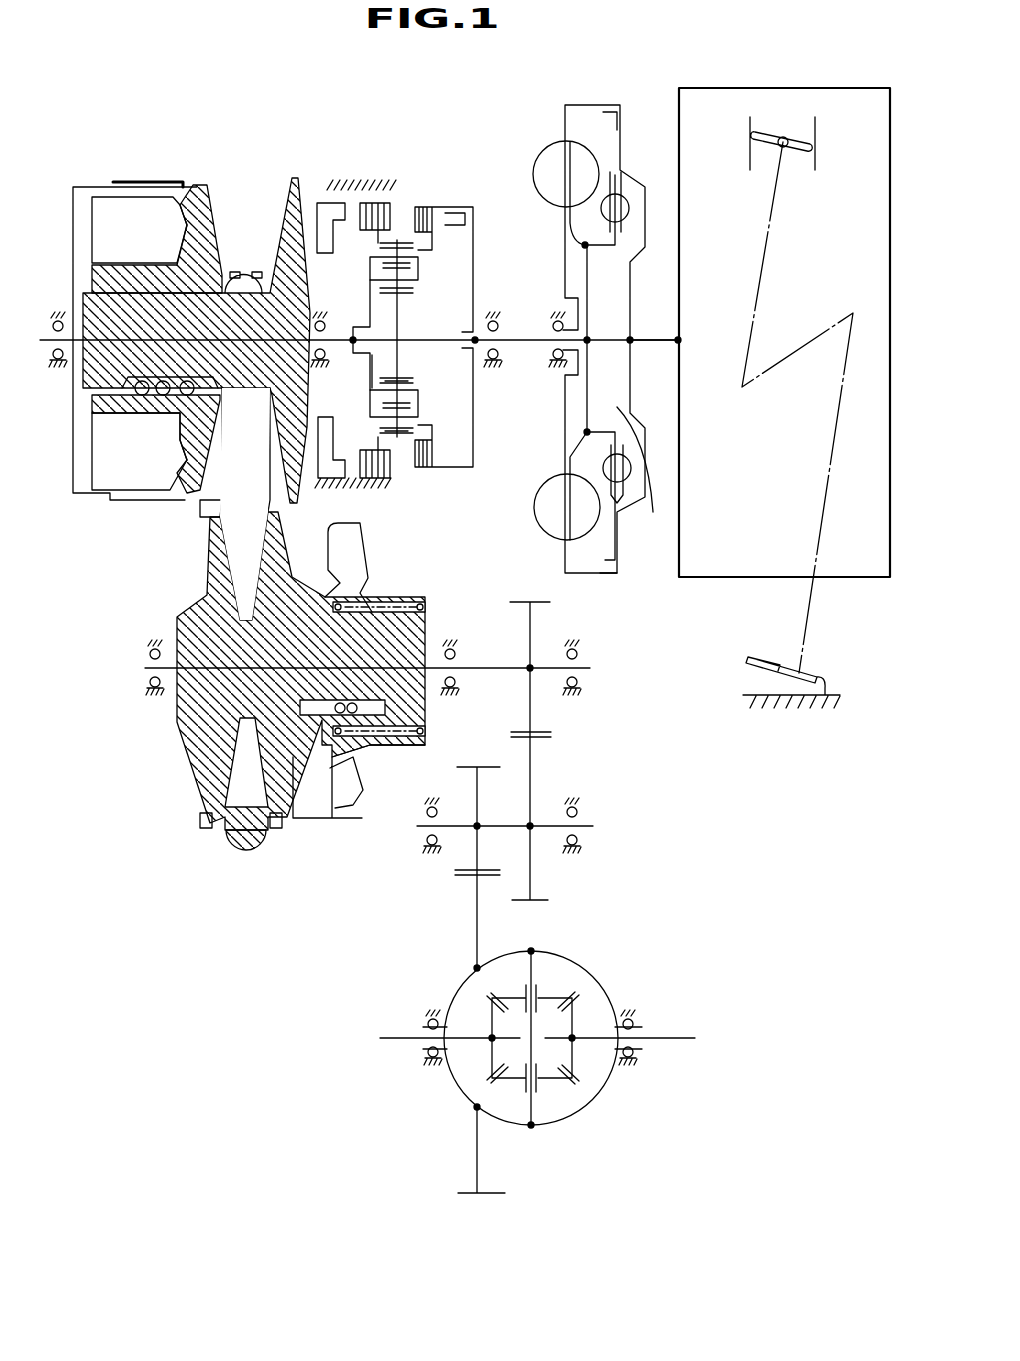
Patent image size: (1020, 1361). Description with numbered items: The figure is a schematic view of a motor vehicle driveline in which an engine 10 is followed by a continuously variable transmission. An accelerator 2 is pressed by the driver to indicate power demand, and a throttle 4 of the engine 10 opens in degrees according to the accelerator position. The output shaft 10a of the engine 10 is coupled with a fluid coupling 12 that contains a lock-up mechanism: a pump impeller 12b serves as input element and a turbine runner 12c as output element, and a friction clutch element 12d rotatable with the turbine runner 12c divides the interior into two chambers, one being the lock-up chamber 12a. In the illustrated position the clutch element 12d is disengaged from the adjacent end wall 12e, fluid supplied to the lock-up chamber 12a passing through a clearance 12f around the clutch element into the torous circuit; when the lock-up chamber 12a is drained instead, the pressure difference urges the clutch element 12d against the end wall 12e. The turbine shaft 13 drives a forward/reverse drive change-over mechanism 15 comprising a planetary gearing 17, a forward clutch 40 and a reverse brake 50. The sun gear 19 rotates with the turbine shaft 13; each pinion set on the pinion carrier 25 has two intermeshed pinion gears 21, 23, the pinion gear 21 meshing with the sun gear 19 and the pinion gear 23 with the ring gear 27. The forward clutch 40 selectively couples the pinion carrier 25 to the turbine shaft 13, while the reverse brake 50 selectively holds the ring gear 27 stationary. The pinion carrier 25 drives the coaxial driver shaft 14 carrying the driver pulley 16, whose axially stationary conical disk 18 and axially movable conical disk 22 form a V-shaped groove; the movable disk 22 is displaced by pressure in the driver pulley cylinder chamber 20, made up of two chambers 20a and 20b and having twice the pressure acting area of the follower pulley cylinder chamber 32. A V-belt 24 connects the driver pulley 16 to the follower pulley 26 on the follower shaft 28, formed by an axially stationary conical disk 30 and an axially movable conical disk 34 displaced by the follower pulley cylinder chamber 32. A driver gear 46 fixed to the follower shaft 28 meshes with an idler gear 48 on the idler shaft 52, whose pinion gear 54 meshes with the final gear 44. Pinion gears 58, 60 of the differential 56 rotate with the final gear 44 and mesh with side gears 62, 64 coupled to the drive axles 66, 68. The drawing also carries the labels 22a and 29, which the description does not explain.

The accelerator 2 is at (805, 673).
The throttle 4 is at (770, 130).
The engine 10 is at (753, 88).
The output shaft 10a is at (657, 342).
The fluid coupling 12 is at (596, 100).
The lock-up chamber 12a is at (646, 473).
The pump impeller 12b is at (537, 496).
The turbine runner 12c is at (578, 495).
The friction clutch element 12d is at (618, 141).
The end wall 12e is at (620, 123).
The clearance 12f is at (617, 574).
The turbine shaft 13 is at (522, 348).
The driver shaft 14 is at (343, 346).
The forward/reverse drive change-over mechanism 15 is at (368, 150).
The driver pulley 16 is at (288, 176).
The planetary gearing 17 is at (430, 268).
The axially stationary conical disk 18 is at (298, 188).
The sun gear 19 is at (400, 363).
The driver pulley cylinder chamber 20 is at (110, 208).
The chamber 20a is at (92, 498).
The chamber 20b is at (182, 183).
The pinion gear 21 is at (407, 392).
The axially movable conical disk 22 is at (200, 185).
The bearing 22a is at (207, 197).
The pinion gear 23 is at (410, 428).
The V-belt 24 is at (205, 508).
The pinion carrier 25 is at (372, 377).
The follower pulley 26 is at (238, 848).
The ring gear 27 is at (408, 437).
The follower shaft 28 is at (492, 672).
The driven pulley 29 is at (183, 600).
The axially stationary conical disk 30 is at (215, 765).
The follower pulley cylinder chamber 32 is at (312, 800).
The axially movable conical disk 34 is at (278, 823).
The forward clutch 40 is at (445, 200).
The final gear 44 is at (490, 1195).
The driver gear 46 is at (520, 602).
The idler gear 48 is at (533, 862).
The reverse brake 50 is at (418, 197).
The idler shaft 52 is at (547, 826).
The pinion gear 54 is at (477, 843).
The differential 56 is at (604, 962).
The pinion gear 58 is at (550, 1078).
The pinion gear 60 is at (510, 997).
The side gear 62 is at (492, 1060).
The side gear 64 is at (575, 1014).
The drive axle 66 is at (393, 1040).
The drive axle 68 is at (673, 1040).